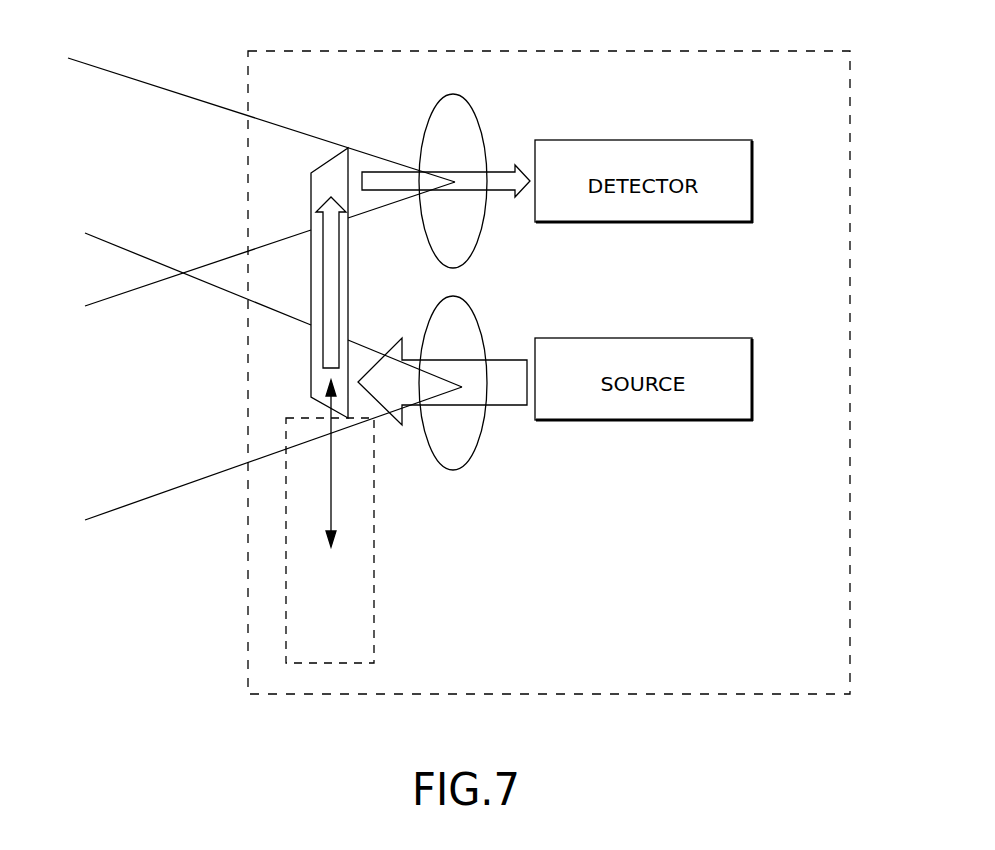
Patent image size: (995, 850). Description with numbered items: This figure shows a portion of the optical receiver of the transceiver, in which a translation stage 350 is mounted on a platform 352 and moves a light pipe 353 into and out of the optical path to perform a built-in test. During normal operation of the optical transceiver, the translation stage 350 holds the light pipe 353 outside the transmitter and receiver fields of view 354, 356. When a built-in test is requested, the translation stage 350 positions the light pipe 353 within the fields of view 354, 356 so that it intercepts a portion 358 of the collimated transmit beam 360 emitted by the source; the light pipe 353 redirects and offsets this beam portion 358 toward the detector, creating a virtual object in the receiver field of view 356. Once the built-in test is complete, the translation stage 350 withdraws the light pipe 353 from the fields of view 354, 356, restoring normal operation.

The translation stage 350 is at (347, 623).
The platform 352 is at (782, 651).
The light pipe 353 is at (310, 343).
The transmitter field of view 354 is at (162, 493).
The receiver field of view 356 is at (146, 83).
The beam portion 358 is at (348, 290).
The collimated transmit beam 360 is at (497, 397).